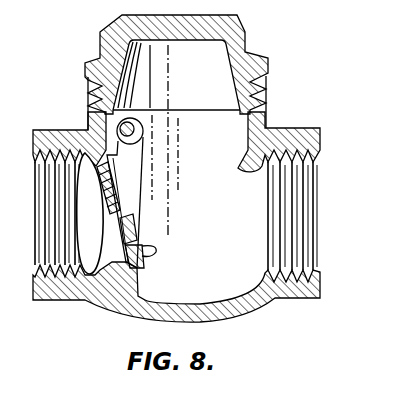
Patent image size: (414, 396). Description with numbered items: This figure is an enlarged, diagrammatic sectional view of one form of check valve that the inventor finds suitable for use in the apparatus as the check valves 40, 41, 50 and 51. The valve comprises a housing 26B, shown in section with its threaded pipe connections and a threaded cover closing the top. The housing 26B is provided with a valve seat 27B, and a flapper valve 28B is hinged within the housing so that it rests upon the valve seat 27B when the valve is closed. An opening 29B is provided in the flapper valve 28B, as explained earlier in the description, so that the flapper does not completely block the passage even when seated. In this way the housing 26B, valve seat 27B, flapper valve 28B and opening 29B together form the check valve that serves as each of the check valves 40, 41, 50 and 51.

The housing 26B is at (152, 318).
The valve seat 27B is at (136, 286).
The flapper valve 28B is at (134, 206).
The opening 29B is at (135, 233).
The check valve 40 is at (235, 125).
The check valve 41 is at (235, 125).
The check valve 50 is at (235, 125).
The check valve 51 is at (270, 107).